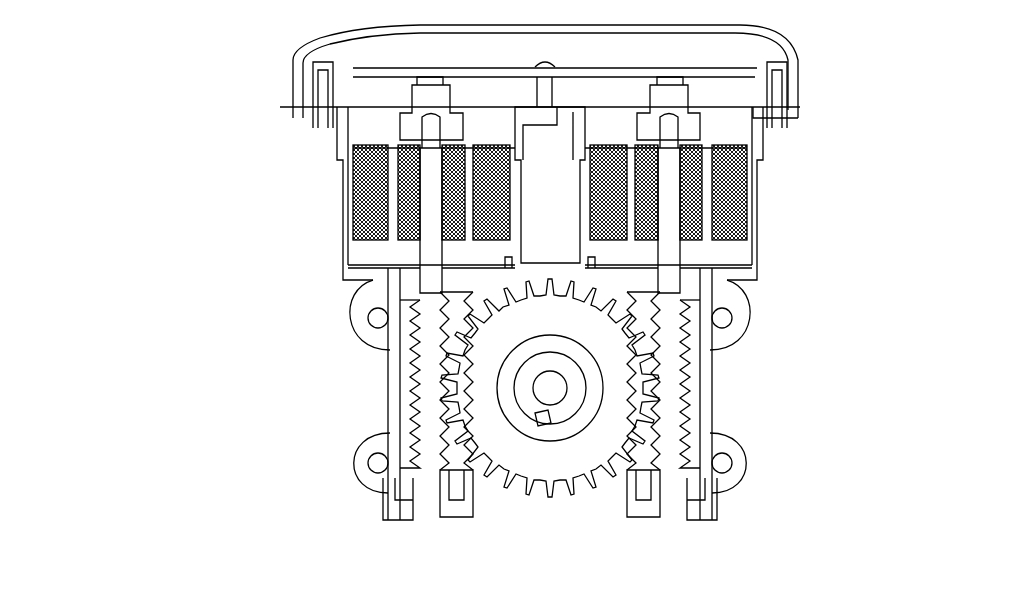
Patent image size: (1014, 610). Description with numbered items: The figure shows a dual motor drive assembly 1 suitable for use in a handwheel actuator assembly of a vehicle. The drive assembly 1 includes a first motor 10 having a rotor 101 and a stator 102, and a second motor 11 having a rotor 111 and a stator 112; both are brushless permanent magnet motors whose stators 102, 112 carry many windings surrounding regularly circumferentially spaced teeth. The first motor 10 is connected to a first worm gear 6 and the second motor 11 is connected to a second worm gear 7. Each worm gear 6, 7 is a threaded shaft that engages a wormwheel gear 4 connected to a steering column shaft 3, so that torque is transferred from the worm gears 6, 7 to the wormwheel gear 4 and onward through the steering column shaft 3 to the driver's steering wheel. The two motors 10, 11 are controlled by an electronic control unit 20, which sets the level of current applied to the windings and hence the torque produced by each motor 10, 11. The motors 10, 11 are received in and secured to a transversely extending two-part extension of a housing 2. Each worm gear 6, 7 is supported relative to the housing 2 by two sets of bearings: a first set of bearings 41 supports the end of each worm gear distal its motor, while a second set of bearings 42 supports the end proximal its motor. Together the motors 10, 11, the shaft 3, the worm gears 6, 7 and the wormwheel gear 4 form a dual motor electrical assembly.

The drive assembly 1 is at (125, 66).
The electronic control unit 20 is at (370, 73).
The first motor 10 is at (278, 234).
The second motor 11 is at (822, 250).
The rotor 101 is at (352, 156).
The stator 102 is at (352, 185).
The stator 112 is at (745, 175).
The rotor 111 is at (745, 217).
The steering column shaft 3 is at (563, 387).
The first worm gear 6 is at (415, 362).
The wormwheel gear 4 is at (455, 415).
The second worm gear 7 is at (655, 338).
The housing 2 is at (383, 477).
The first set of bearings 41 is at (727, 489).
The second set of bearings 42 is at (707, 283).